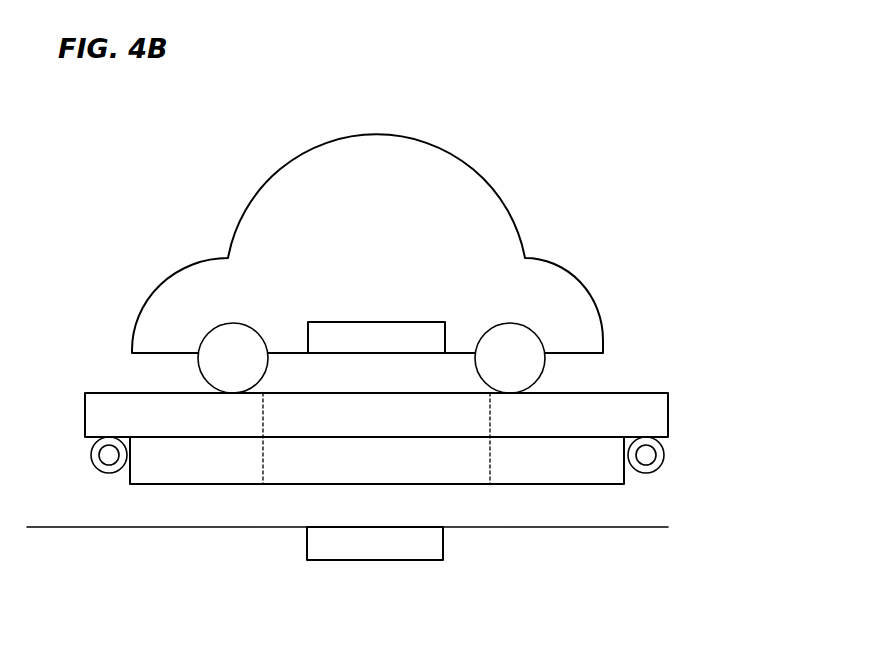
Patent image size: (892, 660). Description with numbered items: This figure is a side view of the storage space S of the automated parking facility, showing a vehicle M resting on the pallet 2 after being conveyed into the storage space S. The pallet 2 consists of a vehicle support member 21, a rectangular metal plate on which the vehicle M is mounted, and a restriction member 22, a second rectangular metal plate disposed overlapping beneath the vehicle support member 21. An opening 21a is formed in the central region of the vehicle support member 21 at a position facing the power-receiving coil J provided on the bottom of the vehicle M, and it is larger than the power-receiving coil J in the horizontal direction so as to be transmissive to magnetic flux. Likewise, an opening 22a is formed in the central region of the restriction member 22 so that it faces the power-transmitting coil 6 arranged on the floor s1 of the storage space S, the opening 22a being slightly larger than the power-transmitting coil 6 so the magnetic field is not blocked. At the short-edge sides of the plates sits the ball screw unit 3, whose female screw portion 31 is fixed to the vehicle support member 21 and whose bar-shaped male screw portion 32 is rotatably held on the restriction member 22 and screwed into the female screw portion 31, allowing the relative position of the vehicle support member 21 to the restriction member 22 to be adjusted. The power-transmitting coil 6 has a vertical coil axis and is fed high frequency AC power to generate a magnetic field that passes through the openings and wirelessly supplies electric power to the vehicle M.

The vehicle M is at (510, 202).
The power-receiving coil J is at (375, 321).
The pallet 2 is at (391, 440).
The vehicle support member 21 is at (110, 391).
The opening 21a is at (266, 410).
The restriction member 22 is at (557, 486).
The opening 22a is at (268, 462).
The ball screw unit 3 is at (391, 441).
The female screw portion 31 is at (93, 452).
The male screw portion 32 is at (107, 456).
The power-transmitting coil 6 is at (446, 548).
The storage space S is at (338, 479).
The floor s1 is at (100, 526).